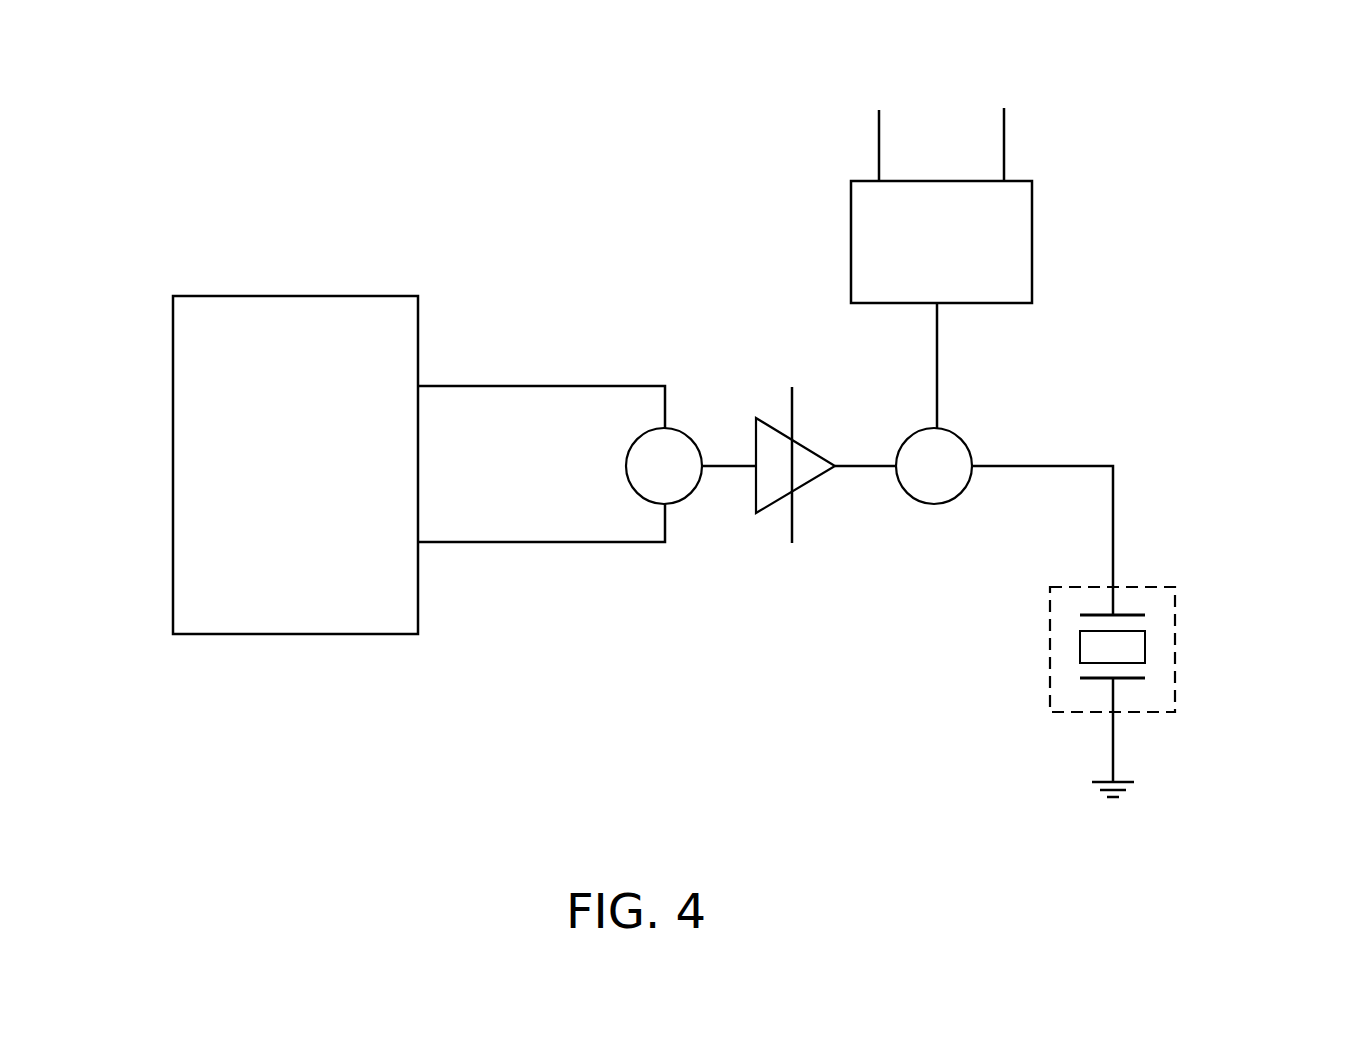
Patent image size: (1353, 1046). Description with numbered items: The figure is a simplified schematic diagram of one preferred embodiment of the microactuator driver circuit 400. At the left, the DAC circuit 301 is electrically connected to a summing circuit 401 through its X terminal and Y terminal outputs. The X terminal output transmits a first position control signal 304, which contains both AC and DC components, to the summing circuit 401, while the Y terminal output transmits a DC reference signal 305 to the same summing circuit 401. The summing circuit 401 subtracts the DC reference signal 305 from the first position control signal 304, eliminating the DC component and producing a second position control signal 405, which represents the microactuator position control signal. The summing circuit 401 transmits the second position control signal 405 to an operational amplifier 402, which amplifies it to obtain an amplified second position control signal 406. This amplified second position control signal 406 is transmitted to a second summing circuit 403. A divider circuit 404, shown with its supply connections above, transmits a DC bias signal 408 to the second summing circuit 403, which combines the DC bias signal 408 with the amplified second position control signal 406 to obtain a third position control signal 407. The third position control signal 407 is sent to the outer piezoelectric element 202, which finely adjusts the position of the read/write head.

The microactuator driver circuit 400 is at (1157, 172).
The DAC circuit 301 is at (295, 465).
The first position control signal 304 is at (553, 384).
The DC reference signal 305 is at (553, 544).
The summing circuit 401 is at (664, 467).
The second position control signal 405 is at (728, 468).
The operational amplifier 402 is at (795, 469).
The amplified second position control signal 406 is at (866, 468).
The second summing circuit 403 is at (934, 451).
The divider circuit 404 is at (944, 193).
The DC bias signal 408 is at (937, 335).
The third position control signal 407 is at (1027, 468).
The outer piezoelectric element 202 is at (1050, 612).